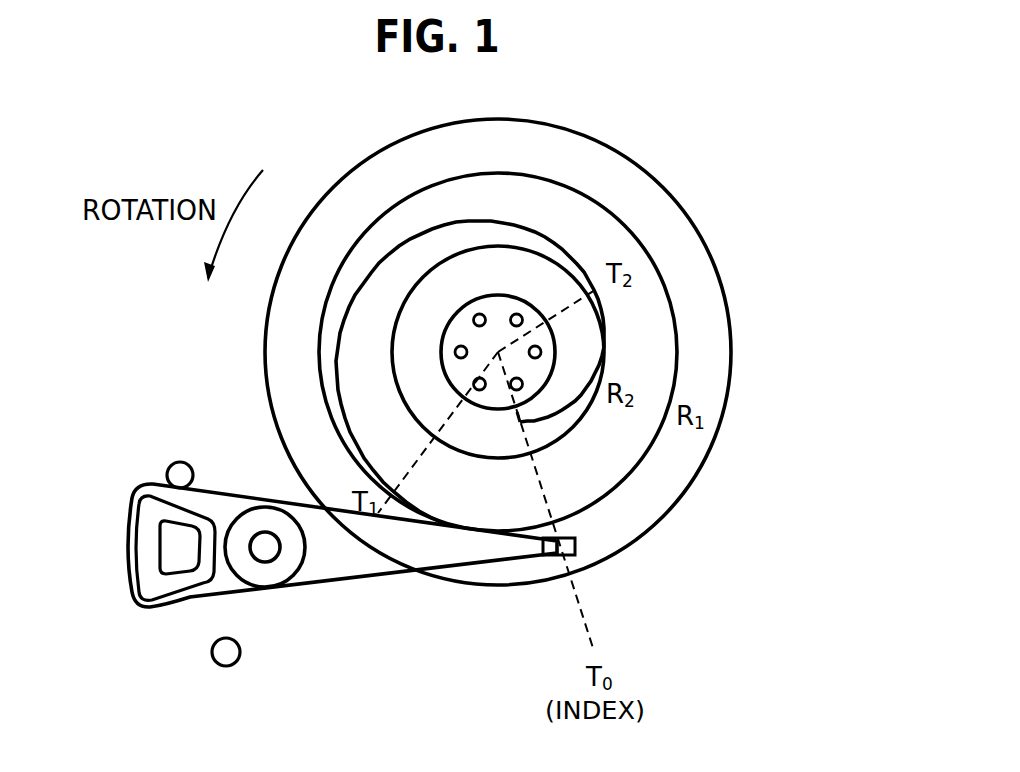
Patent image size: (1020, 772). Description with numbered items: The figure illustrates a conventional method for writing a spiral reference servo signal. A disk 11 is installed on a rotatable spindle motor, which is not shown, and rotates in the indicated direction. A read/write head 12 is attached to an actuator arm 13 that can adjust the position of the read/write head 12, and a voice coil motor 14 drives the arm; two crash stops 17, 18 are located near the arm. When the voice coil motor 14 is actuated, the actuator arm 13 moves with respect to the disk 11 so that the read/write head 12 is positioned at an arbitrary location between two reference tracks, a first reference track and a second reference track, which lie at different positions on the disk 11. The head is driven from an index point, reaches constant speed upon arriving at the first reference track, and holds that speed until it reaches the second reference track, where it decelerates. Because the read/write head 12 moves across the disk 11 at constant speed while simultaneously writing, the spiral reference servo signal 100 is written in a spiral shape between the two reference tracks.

The disk 11 is at (678, 508).
The read/write head 12 is at (547, 558).
The actuator arm 13 is at (390, 550).
The voice coil motor 14 is at (148, 549).
The crash stop 17 is at (193, 466).
The crash stop 18 is at (213, 664).
The spiral reference servo signal 100 is at (536, 233).